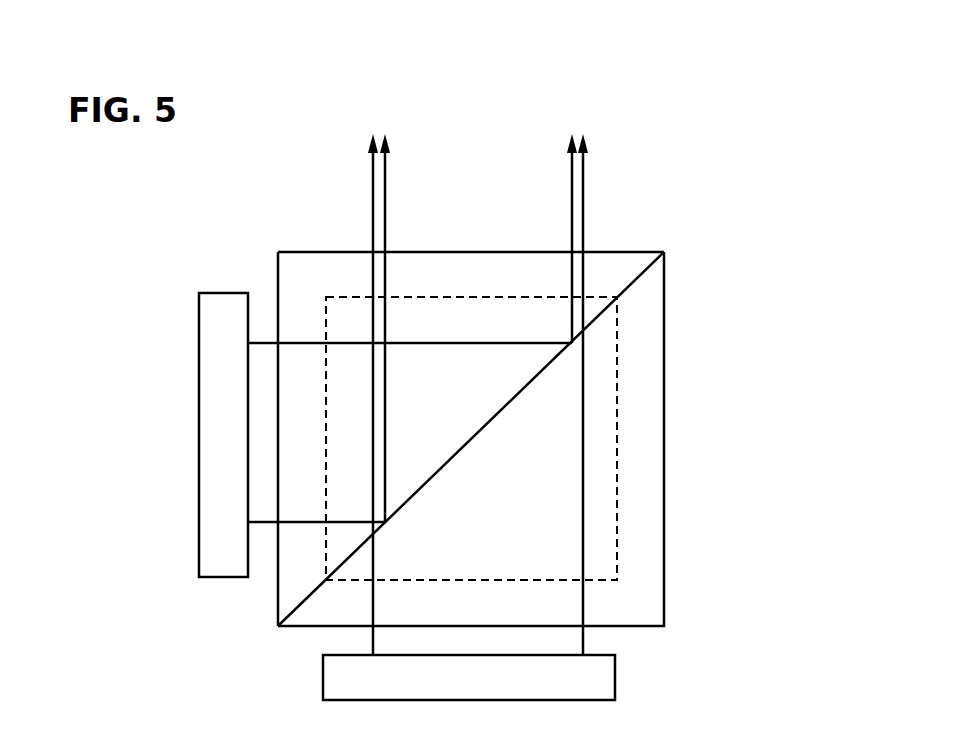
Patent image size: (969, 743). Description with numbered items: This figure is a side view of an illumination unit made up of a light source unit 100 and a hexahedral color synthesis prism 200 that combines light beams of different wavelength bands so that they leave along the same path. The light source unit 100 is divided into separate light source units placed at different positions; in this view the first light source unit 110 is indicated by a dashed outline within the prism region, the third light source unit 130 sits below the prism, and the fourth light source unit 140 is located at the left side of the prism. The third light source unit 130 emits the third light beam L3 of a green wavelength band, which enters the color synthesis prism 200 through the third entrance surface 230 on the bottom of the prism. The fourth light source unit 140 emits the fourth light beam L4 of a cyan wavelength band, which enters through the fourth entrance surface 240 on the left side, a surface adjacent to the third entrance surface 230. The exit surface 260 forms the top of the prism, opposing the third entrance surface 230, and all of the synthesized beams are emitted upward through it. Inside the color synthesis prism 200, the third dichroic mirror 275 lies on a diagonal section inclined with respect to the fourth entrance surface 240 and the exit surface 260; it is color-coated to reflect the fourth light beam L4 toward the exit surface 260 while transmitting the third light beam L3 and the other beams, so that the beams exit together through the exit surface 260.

The light source unit 100 is at (172, 286).
The first light source unit 110 is at (617, 572).
The third light source unit 130 is at (600, 681).
The fourth light source unit 140 is at (210, 559).
The color synthesis prism 200 is at (698, 267).
The third entrance surface 230 is at (297, 626).
The fourth entrance surface 240 is at (278, 268).
The exit surface 260 is at (432, 250).
The third dichroic mirror 275 is at (645, 252).
The third light beam L3 is at (583, 643).
The fourth light beam L4 is at (265, 522).